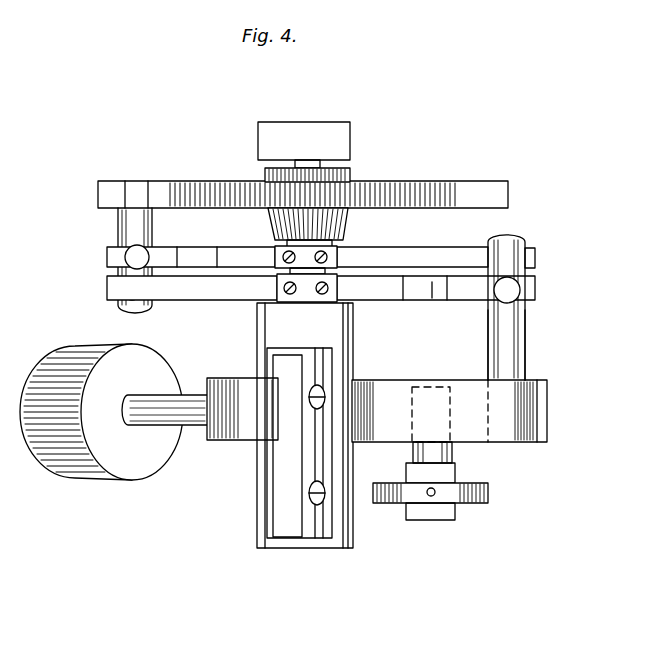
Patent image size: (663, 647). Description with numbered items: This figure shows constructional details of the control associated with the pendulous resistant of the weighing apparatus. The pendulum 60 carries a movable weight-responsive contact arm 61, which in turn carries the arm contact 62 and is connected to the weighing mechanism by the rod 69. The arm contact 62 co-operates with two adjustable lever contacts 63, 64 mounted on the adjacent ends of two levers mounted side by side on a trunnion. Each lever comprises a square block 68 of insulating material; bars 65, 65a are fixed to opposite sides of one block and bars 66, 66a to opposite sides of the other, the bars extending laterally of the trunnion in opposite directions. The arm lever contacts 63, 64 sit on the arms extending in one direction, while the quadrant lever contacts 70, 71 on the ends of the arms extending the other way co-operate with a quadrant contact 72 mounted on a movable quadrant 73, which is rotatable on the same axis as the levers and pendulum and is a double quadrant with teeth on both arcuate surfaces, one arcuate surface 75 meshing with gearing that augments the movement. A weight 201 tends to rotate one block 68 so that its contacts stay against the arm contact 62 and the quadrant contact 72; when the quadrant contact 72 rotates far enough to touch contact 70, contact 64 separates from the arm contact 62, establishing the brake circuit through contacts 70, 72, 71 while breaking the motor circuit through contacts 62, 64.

The pendulum 60 is at (197, 408).
The contact arm 61 is at (278, 473).
The arm contact 62 is at (513, 323).
The arm lever contact 63 is at (515, 290).
The arm lever contact 64 is at (527, 236).
The lever bar 65 is at (475, 288).
The lever bar 65a is at (230, 288).
The lever bar 66 is at (452, 258).
The lever bar 66a is at (248, 232).
The square block 68 is at (340, 247).
The rod 69 is at (426, 496).
The quadrant lever contact 70 is at (138, 256).
The quadrant lever contact 71 is at (128, 300).
The quadrant contact 72 is at (127, 226).
The quadrant 73 is at (486, 196).
The arcuate surface 75 is at (395, 181).
The weight 201 is at (432, 292).